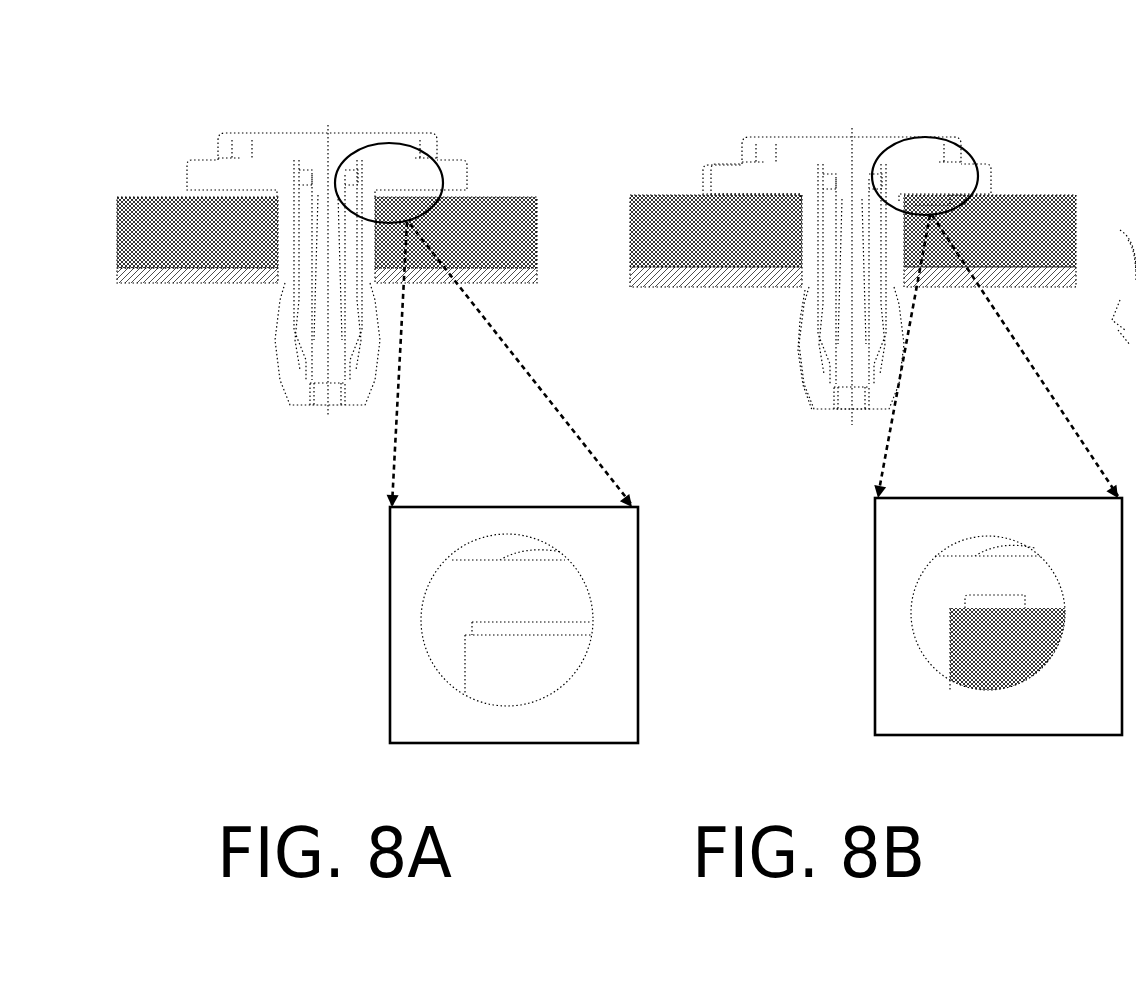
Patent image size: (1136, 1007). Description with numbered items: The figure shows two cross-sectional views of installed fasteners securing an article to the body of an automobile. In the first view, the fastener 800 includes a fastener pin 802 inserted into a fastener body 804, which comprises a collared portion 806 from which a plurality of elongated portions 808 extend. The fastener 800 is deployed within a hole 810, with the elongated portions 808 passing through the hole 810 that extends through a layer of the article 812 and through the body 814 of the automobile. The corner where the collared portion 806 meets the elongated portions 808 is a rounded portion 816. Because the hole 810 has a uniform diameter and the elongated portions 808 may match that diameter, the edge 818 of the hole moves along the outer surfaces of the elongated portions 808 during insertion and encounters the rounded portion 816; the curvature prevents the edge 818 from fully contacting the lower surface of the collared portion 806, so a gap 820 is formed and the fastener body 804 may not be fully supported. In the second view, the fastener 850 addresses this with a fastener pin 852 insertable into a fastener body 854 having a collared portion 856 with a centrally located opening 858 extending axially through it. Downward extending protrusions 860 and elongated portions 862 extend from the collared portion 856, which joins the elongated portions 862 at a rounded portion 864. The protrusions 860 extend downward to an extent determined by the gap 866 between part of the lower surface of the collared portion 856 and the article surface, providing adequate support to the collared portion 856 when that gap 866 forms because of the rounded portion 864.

In FIG. 8A, the fastener 800 is at (410, 60).
In FIG. 8A, the fastener pin 802 is at (305, 133).
In FIG. 8A, the fastener body 804 is at (420, 352).
In FIG. 8A, the collared portion 806 is at (447, 160).
In FIG. 8A, the elongated portion 808 is at (282, 290).
In FIG. 8A, the hole 810 is at (440, 228).
In FIG. 8A, the article 812 is at (163, 197).
In FIG. 8A, the body 814 is at (135, 285).
In FIG. 8A, the rounded portion 816 is at (474, 622).
In FIG. 8A, the edge 818 is at (468, 635).
In FIG. 8A, the gap 820 is at (545, 628).
In FIG. 8B, the fastener 850 is at (862, 92).
In FIG. 8B, the fastener pin 852 is at (819, 137).
In FIG. 8B, the fastener body 854 is at (945, 352).
In FIG. 8B, the collared portion 856 is at (714, 165).
In FIG. 8B, the centrally located opening 858 is at (802, 214).
In FIG. 8B, the protrusion 860 is at (984, 193).
In FIG. 8B, the elongated portion 862 is at (812, 296).
In FIG. 8B, the rounded portion 864 is at (955, 605).
In FIG. 8B, the gap 866 is at (1008, 608).